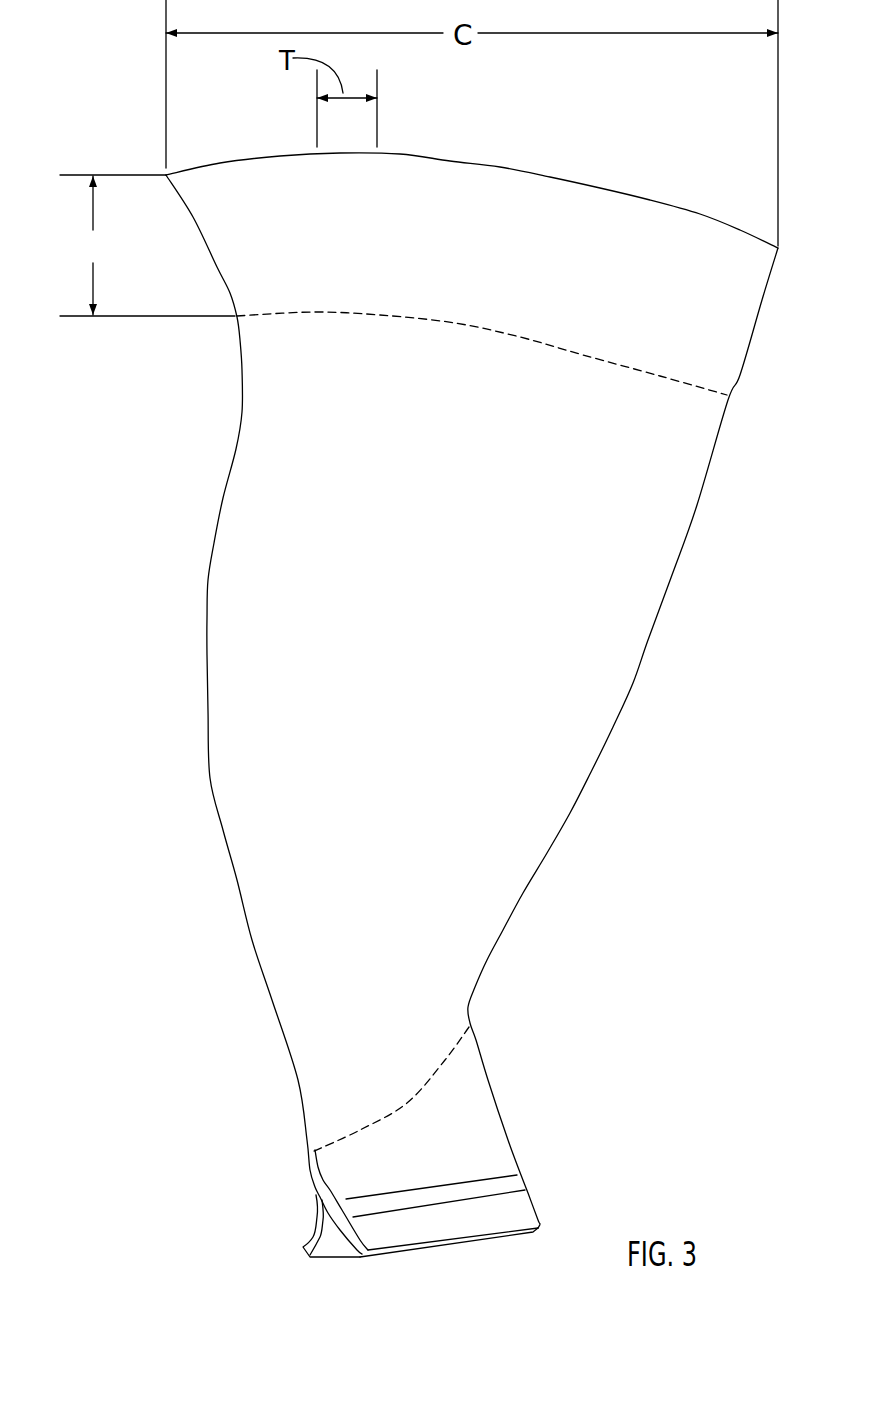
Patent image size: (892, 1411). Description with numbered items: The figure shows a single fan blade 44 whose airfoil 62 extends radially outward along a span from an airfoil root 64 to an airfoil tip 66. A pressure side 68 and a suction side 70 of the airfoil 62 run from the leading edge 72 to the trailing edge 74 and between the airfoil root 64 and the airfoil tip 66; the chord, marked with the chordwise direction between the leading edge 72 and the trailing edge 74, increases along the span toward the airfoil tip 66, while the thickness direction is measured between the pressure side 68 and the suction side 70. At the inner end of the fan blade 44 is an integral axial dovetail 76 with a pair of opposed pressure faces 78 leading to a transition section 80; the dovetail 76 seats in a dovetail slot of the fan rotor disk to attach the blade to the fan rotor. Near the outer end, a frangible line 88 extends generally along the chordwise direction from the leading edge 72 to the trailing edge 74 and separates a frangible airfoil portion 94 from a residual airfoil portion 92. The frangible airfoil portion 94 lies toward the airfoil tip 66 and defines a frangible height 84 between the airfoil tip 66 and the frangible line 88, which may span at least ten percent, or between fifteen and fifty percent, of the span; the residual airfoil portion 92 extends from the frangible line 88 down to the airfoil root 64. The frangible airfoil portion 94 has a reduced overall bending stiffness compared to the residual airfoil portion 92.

The fan blade 44 is at (627, 146).
The airfoil 62 is at (272, 905).
The airfoil root 64 is at (433, 1072).
The airfoil tip 66 is at (502, 166).
The pressure side 68 is at (439, 627).
The suction side 70 is at (258, 588).
The leading edge 72 is at (207, 767).
The trailing edge 74 is at (651, 645).
The axial dovetail 76 is at (332, 1243).
The pressure faces 78 is at (305, 1218).
The transition section 80 is at (473, 1138).
The frangible height 84 is at (147, 245).
The frangible line 88 is at (378, 317).
The residual airfoil portion 92 is at (663, 515).
The frangible airfoil portion 94 is at (742, 312).